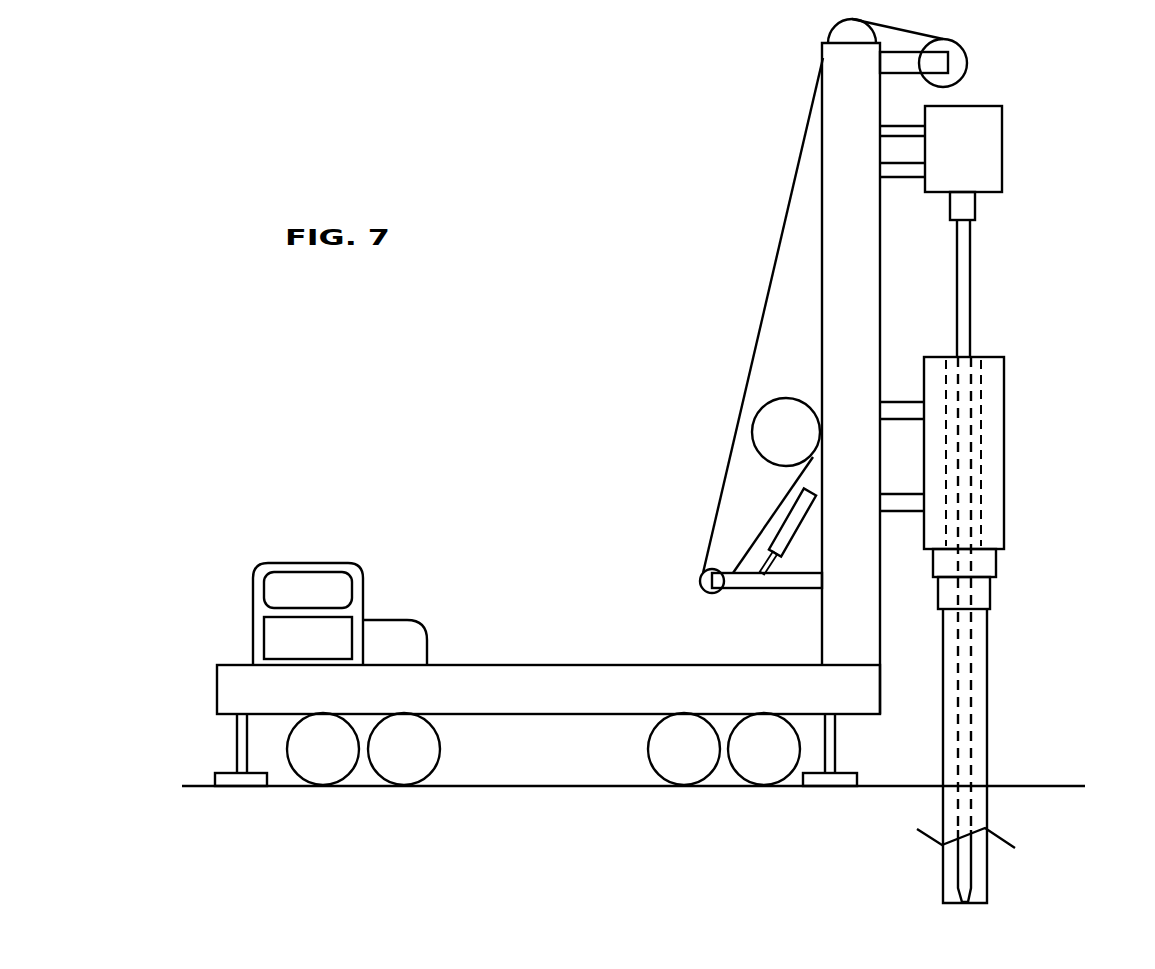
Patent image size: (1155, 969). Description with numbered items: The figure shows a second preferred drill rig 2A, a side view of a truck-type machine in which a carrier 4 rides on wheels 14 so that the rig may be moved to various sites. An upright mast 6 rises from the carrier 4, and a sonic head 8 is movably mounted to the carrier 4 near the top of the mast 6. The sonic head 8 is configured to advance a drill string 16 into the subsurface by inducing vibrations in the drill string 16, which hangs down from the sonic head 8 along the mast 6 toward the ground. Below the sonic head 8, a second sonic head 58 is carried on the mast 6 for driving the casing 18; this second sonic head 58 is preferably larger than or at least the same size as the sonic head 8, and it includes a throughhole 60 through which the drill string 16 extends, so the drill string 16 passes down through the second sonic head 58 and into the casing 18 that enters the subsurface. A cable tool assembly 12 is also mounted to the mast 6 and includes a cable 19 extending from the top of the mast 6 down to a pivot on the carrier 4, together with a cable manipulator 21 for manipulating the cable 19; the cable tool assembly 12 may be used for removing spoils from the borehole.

The second preferred drill rig 2A is at (762, 128).
The carrier 4 is at (600, 665).
The mast 6 is at (872, 312).
The sonic head 8 is at (998, 144).
The cable tool assembly 12 is at (752, 586).
The wheels 14 is at (662, 748).
The drill string 16 is at (963, 643).
The casing 18 is at (988, 735).
The cable 19 is at (769, 273).
The cable manipulator 21 is at (806, 505).
The second sonic head 58 is at (1003, 371).
The throughhole 60 is at (975, 438).